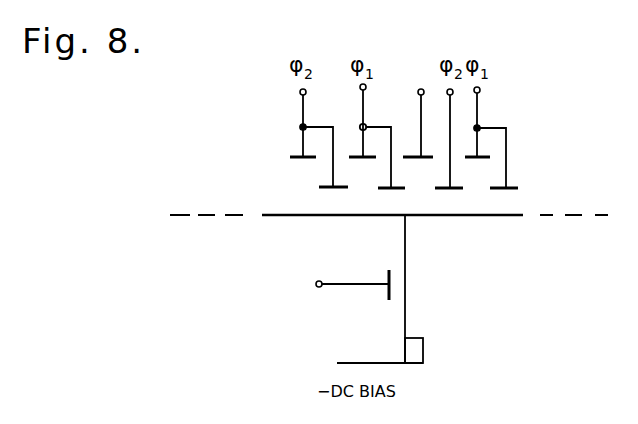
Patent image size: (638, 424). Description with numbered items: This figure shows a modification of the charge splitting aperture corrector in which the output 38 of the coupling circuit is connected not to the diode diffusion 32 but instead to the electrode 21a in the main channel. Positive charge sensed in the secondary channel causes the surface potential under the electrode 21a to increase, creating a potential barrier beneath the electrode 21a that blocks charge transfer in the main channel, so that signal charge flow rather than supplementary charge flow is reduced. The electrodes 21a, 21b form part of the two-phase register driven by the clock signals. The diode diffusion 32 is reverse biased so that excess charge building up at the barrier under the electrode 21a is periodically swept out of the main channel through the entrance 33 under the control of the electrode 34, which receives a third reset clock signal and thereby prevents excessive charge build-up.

The output of the coupling circuit 38 is at (399, 104).
The electrode 21a is at (433, 159).
The gate electrode 21b is at (379, 189).
The electrode 34 is at (364, 284).
The entrance 33 is at (369, 362).
The diode diffusion 32 is at (423, 339).